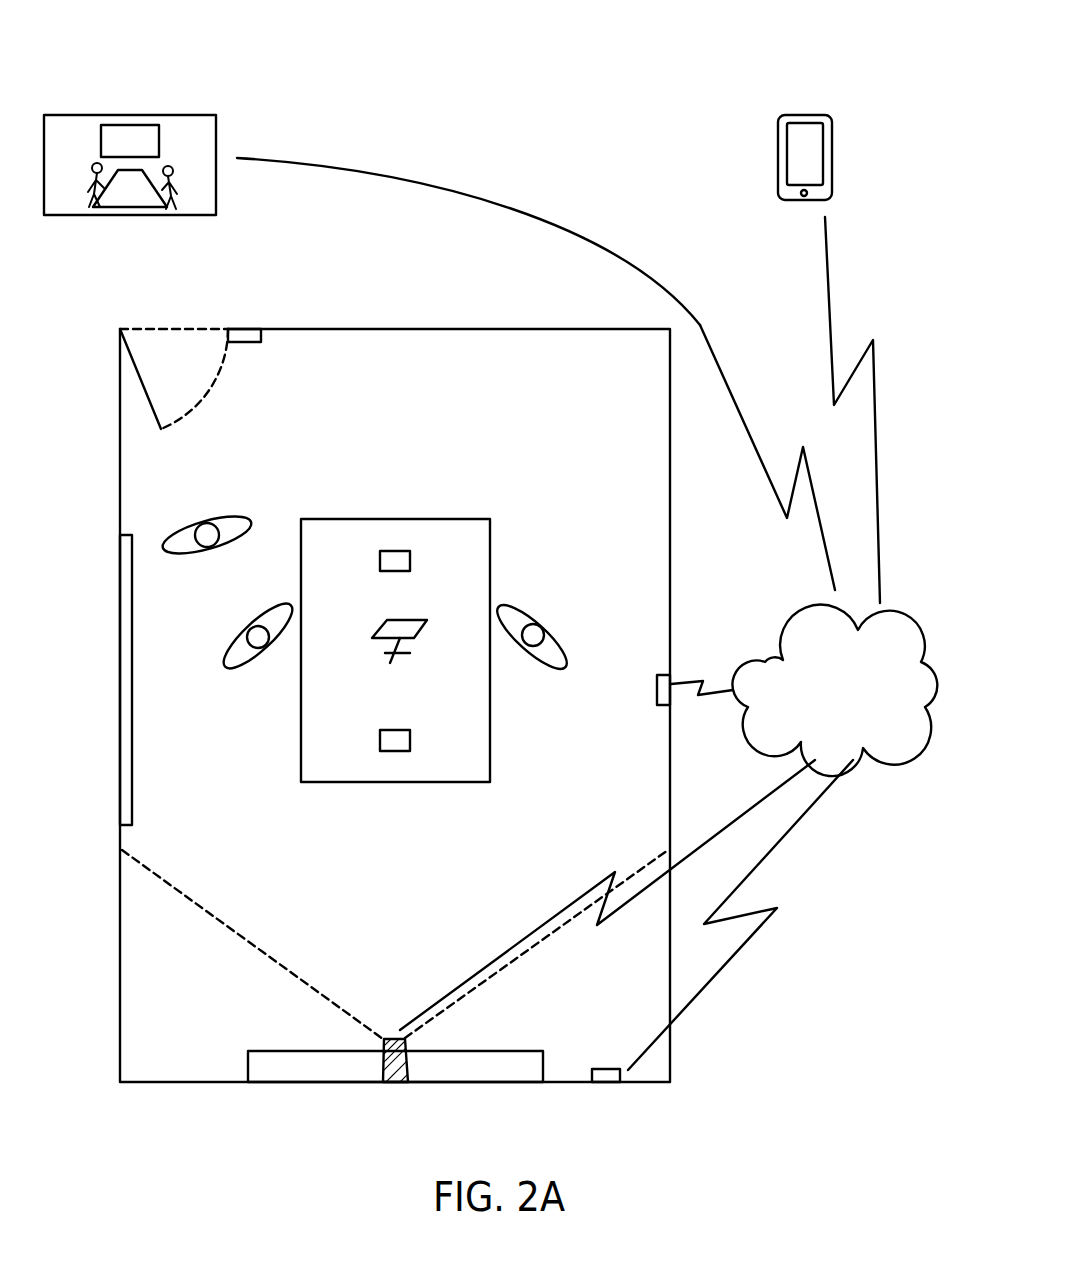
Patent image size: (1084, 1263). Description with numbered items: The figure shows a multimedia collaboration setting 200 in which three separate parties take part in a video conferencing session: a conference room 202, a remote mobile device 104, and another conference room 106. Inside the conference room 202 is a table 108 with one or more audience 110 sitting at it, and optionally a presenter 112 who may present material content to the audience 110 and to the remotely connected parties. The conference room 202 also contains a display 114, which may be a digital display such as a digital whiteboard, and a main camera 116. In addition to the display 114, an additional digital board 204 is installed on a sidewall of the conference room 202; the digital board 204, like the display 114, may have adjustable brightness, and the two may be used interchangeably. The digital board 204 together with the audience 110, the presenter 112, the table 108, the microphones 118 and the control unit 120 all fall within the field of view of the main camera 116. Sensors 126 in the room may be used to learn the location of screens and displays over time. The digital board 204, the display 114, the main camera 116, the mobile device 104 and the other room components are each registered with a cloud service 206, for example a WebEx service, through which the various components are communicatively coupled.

The setting 200 is at (878, 86).
The remote mobile device 104 is at (807, 115).
The conference room 106 is at (216, 126).
The conference room 202 is at (672, 461).
The digital board 204 is at (120, 678).
The sensors 126 is at (244, 342).
The table 108 is at (490, 546).
The microphones 118 is at (410, 560).
The control unit 120 is at (420, 628).
The presenter 112 is at (178, 535).
The audience 110 is at (240, 666).
The display 114 is at (351, 1066).
The main camera 116 is at (408, 1070).
The cloud service 206 is at (782, 650).